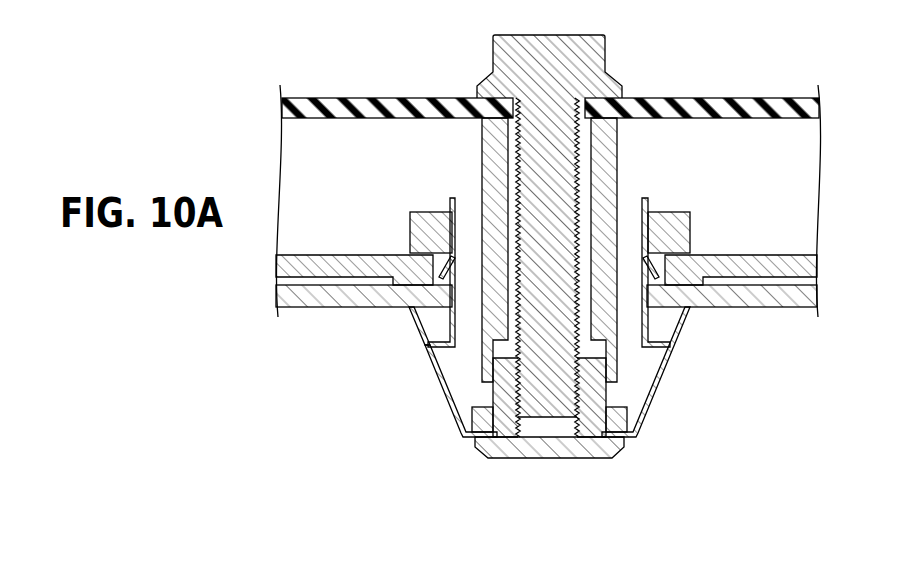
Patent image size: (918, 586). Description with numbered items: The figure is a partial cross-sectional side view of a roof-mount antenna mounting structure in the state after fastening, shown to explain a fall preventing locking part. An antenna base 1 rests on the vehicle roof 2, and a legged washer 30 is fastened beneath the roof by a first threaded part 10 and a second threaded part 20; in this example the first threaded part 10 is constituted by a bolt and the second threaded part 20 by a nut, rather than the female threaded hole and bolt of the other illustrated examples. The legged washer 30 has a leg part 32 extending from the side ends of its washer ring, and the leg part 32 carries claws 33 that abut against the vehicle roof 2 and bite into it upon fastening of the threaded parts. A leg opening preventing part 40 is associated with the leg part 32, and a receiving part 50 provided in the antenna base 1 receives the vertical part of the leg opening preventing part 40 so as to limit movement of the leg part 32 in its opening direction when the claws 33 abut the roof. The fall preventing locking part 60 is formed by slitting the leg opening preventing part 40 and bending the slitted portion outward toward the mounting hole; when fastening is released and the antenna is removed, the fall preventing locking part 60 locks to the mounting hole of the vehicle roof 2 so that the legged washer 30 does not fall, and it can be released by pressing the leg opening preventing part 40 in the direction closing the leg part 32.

The antenna base 1 is at (800, 266).
The vehicle roof 2 is at (782, 300).
The first threaded part 10 is at (594, 49).
The second threaded part 20 is at (612, 447).
The legged washer 30 is at (657, 413).
The leg part 32 is at (448, 400).
The claws 33 is at (410, 321).
The leg opening preventing part 40 is at (450, 202).
The receiving part 50 is at (445, 228).
The fall preventing locking part 60 is at (447, 272).